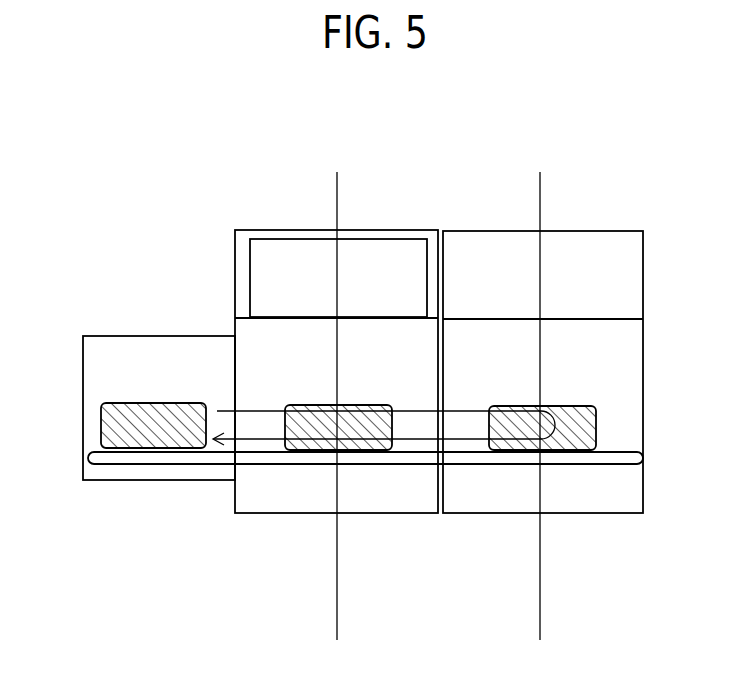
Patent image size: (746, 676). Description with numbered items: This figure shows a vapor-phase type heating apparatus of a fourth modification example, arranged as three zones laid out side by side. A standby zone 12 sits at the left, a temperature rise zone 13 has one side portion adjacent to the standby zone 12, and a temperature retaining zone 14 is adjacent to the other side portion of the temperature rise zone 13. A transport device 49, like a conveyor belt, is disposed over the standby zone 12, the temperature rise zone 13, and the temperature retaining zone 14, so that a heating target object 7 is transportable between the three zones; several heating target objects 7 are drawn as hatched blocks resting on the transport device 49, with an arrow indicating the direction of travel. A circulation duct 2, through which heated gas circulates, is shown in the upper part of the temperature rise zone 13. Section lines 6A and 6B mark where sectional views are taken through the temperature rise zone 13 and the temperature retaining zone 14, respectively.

The circulation duct 2 is at (288, 266).
The heating target object 7 is at (125, 420).
The standby zone 12 is at (162, 356).
The temperature rise zone 13 is at (268, 500).
The temperature retaining zone 14 is at (624, 503).
The transport device 49 is at (625, 457).
The sectional view of temperature rise zone 6A is at (337, 193).
The sectional view of temperature retaining zone 6B is at (540, 193).